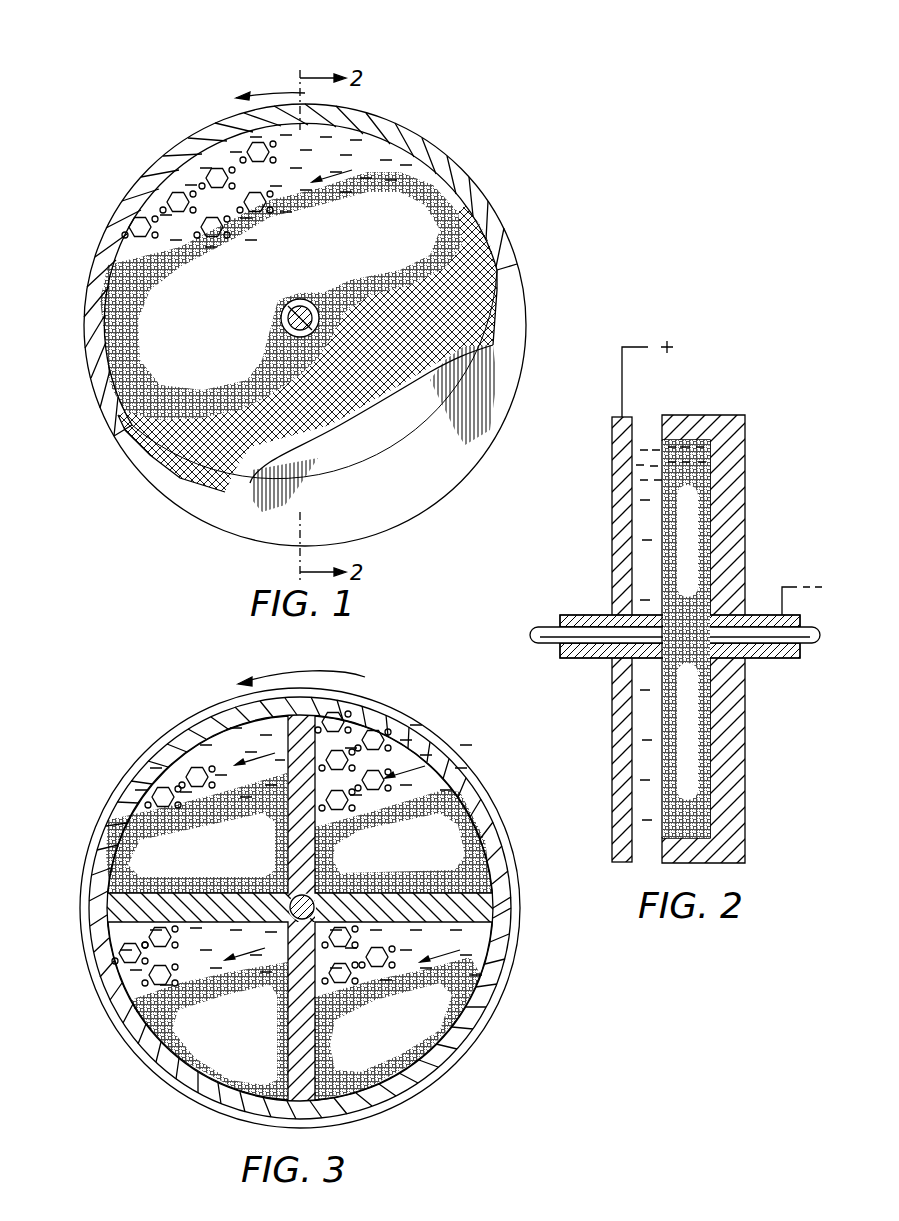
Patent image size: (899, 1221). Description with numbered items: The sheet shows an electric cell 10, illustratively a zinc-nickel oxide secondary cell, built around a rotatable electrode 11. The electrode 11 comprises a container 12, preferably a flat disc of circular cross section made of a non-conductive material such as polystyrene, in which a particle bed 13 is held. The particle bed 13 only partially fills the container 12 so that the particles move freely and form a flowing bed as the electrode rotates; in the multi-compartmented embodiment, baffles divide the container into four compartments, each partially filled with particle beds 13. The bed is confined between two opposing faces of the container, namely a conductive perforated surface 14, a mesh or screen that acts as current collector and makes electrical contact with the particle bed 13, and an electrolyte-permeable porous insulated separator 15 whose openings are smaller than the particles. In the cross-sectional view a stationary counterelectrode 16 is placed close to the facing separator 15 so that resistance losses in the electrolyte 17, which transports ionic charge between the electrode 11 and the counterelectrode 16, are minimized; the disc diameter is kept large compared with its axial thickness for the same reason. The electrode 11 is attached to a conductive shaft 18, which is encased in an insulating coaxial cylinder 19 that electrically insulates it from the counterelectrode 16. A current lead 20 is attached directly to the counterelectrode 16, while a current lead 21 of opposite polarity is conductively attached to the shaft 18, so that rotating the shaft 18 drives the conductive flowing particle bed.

In FIG. 1, the electric cell 10 is at (418, 124).
In FIG. 2, the electric cell 10 is at (705, 388).
In FIG. 1, the rotatable electrode 11 is at (456, 151).
In FIG. 2, the rotatable electrode 11 is at (746, 456).
In FIG. 3, the rotatable electrode 11 is at (466, 758).
In FIG. 1, the container 12 is at (487, 206).
In FIG. 2, the container 12 is at (746, 512).
In FIG. 3, the container 12 is at (505, 830).
In FIG. 1, the particle bed 13 is at (278, 277).
In FIG. 2, the particle bed 13 is at (702, 544).
In FIG. 3, the particle bed 13 is at (228, 854).
In FIG. 1, the conductive perforated surface 14 is at (152, 200).
In FIG. 2, the conductive perforated surface 14 is at (718, 742).
In FIG. 3, the conductive perforated surface 14 is at (146, 762).
In FIG. 1, the electrolyte-permeable porous insulated separator 15 is at (170, 463).
In FIG. 2, the electrolyte-permeable porous insulated separator 15 is at (664, 830).
In FIG. 1, the counterelectrode 16 is at (392, 510).
In FIG. 2, the counterelectrode 16 is at (612, 528).
In FIG. 2, the electrolyte 17 is at (662, 792).
In FIG. 2, the conductive shaft 18 is at (560, 618).
In FIG. 2, the insulating coaxial cylinder 19 is at (580, 658).
In FIG. 2, the current lead 20 is at (622, 390).
In FIG. 2, the current lead of opposite polarity 21 is at (782, 600).